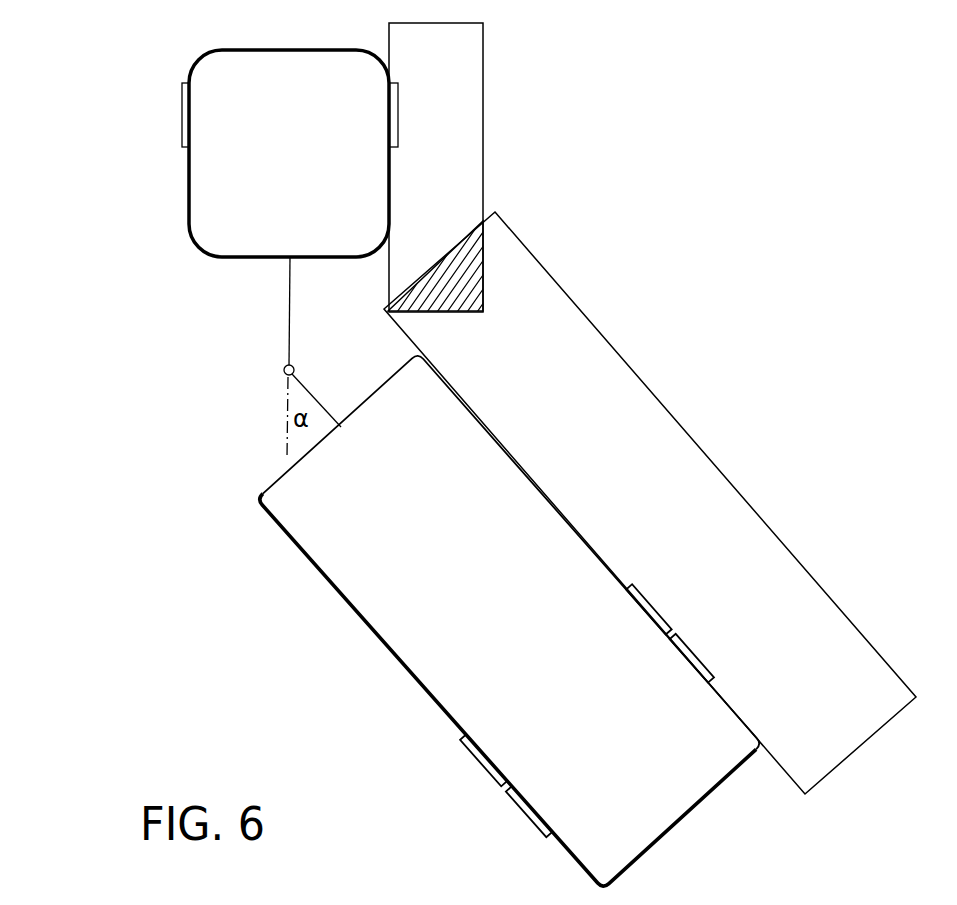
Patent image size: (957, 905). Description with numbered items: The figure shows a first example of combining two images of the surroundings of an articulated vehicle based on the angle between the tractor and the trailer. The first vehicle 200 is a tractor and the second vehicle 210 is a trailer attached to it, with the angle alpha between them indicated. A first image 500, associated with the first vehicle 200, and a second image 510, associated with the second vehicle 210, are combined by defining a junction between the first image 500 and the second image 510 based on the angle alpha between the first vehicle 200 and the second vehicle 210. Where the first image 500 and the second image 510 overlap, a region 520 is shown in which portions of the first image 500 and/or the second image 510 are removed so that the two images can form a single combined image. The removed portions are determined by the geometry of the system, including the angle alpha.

The first vehicle 200 is at (188, 162).
The second vehicle 210 is at (367, 628).
The first image 500 is at (477, 147).
The second image 510 is at (688, 456).
The region 520 is at (462, 283).